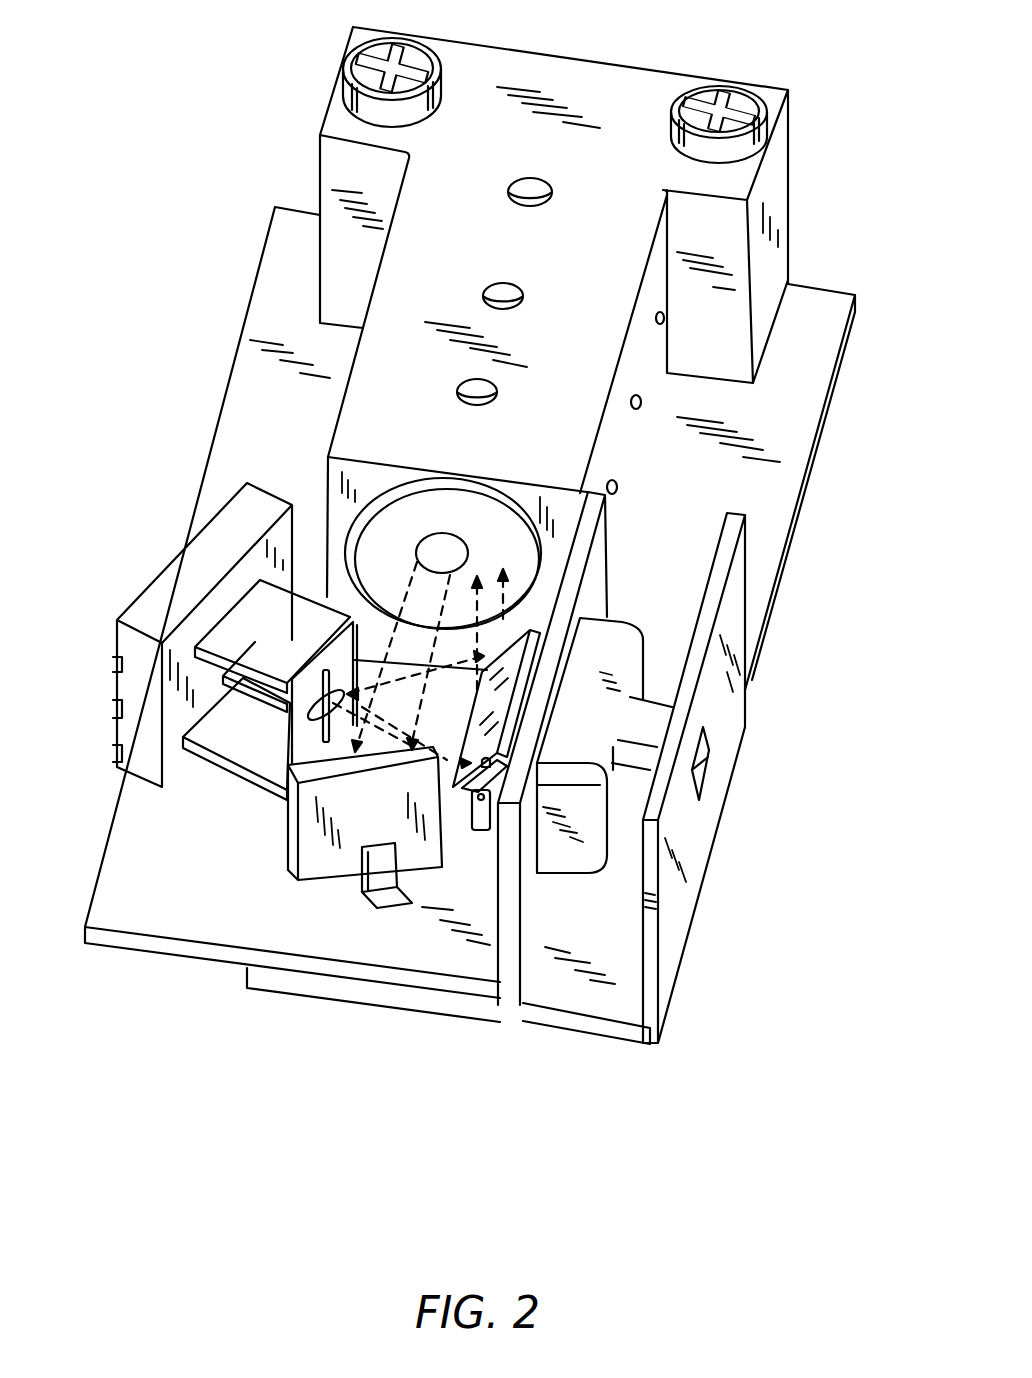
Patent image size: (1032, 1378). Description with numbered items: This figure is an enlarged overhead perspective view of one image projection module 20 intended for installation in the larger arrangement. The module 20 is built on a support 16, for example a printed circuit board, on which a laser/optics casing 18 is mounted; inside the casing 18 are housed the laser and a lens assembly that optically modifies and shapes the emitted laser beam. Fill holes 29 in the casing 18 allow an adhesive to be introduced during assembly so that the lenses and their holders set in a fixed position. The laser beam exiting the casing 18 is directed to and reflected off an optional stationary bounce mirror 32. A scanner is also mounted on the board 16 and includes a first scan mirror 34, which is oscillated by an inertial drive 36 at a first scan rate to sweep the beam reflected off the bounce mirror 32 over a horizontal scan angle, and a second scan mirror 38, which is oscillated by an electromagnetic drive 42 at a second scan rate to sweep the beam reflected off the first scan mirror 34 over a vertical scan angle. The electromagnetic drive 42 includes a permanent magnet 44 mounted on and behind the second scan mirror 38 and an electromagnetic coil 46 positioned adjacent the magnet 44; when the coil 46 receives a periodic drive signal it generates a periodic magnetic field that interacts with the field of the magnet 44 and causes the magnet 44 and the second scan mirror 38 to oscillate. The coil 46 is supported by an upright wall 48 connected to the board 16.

The support 16 is at (833, 292).
The laser/optics casing 18 is at (596, 60).
The module 20 is at (742, 62).
The fill holes 29 is at (490, 294).
The stationary bounce mirror 32 is at (310, 872).
The first scan mirror 34 is at (318, 708).
The inertial drive 36 is at (155, 606).
The second scan mirror 38 is at (457, 792).
The electromagnetic drive 42 is at (600, 895).
The permanent magnet 44 is at (485, 834).
The electromagnetic coil 46 is at (566, 876).
The upright wall 48 is at (688, 920).